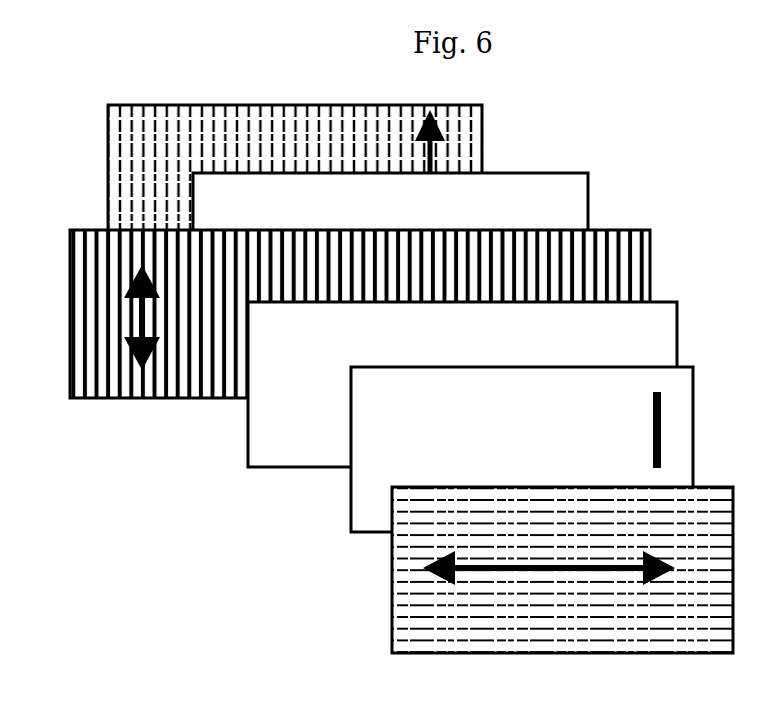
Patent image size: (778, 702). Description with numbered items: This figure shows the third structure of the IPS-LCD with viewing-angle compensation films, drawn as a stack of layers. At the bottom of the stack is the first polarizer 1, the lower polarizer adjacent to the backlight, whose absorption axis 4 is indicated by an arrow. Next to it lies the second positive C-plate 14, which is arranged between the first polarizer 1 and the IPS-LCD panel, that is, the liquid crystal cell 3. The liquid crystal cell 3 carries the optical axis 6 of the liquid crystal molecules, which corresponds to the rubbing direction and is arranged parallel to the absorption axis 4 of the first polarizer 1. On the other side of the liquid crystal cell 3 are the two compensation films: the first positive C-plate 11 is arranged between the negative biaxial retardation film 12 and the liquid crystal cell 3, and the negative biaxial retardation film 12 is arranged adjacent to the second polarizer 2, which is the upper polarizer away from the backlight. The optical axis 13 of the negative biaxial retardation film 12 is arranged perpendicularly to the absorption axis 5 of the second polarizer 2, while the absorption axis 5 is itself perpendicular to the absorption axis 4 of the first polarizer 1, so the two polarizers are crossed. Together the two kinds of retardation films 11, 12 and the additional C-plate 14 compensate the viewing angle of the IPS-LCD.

The first polarizer 1 is at (295, 168).
The second polarizer 2 is at (562, 570).
The liquid crystal cell 3 is at (360, 314).
The absorption axis of the first polarizer 4 is at (446, 141).
The absorption axis of the second polarizer 5 is at (549, 589).
The optical axis of the liquid crystal cell 6 is at (118, 317).
The first positive C-plate 11 is at (462, 384).
The negative biaxial retardation film 12 is at (522, 449).
The optical axis of the negative biaxial retardation film 13 is at (690, 427).
The second positive C-plate 14 is at (390, 202).